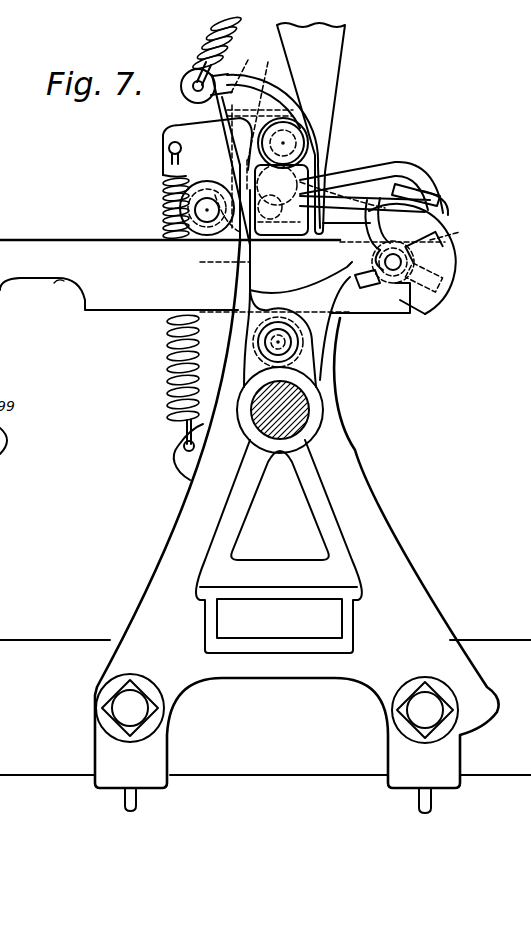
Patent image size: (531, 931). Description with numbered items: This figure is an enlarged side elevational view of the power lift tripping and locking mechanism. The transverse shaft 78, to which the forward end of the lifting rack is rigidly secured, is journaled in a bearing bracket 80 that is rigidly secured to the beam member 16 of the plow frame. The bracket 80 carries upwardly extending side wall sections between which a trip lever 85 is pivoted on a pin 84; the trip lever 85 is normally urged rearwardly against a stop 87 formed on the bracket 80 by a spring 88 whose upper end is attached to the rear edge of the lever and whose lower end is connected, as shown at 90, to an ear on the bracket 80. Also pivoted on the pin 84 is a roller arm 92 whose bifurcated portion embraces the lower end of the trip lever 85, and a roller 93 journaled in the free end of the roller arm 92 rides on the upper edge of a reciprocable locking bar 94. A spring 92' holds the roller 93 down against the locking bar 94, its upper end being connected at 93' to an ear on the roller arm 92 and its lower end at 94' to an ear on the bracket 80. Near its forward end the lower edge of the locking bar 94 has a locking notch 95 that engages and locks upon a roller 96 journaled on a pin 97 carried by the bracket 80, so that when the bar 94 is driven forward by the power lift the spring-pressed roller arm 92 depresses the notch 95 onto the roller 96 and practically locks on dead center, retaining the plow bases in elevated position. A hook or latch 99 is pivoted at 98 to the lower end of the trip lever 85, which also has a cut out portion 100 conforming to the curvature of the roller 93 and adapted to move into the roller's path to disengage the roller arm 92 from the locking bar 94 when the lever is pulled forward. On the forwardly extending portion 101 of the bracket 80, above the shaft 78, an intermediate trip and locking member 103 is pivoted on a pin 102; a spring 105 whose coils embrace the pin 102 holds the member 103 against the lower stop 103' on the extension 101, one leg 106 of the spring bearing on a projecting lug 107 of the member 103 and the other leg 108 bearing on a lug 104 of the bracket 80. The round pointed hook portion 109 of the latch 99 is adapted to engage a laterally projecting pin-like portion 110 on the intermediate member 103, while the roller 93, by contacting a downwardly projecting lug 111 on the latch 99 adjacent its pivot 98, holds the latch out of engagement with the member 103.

The beam member 16 is at (488, 645).
The transverse shaft 78 is at (295, 412).
The bearing bracket 80 is at (410, 582).
The pin 84 is at (290, 145).
The trip lever 85 is at (330, 46).
The stop 87 is at (266, 145).
The spring 88 is at (203, 43).
The lower spring connection 90 is at (182, 77).
The roller arm 92 is at (206, 168).
The spring 92' is at (154, 208).
The roller 93 is at (198, 231).
The upper spring connection 93' is at (153, 146).
The locking bar 94 is at (222, 255).
The lower spring connection 94' is at (167, 397).
The locking notch 95 is at (62, 282).
The roller 96 is at (246, 306).
The pin 97 is at (270, 341).
The latch pivot 98 is at (290, 243).
The latch 99 is at (357, 172).
The cut out portion 100 is at (240, 258).
The forwardly extending portion 101 is at (360, 305).
The pin 102 is at (408, 259).
The intermediate trip and locking member 103 is at (446, 241).
The lower stop 103' is at (450, 281).
The lug 104 is at (373, 290).
The spring 105 is at (437, 213).
The spring leg 106 is at (335, 243).
The projecting lug 107 is at (368, 214).
The spring leg 108 is at (330, 281).
The hook portion 109 is at (408, 200).
The pin-like portion 110 is at (400, 192).
The lug 111 is at (272, 243).